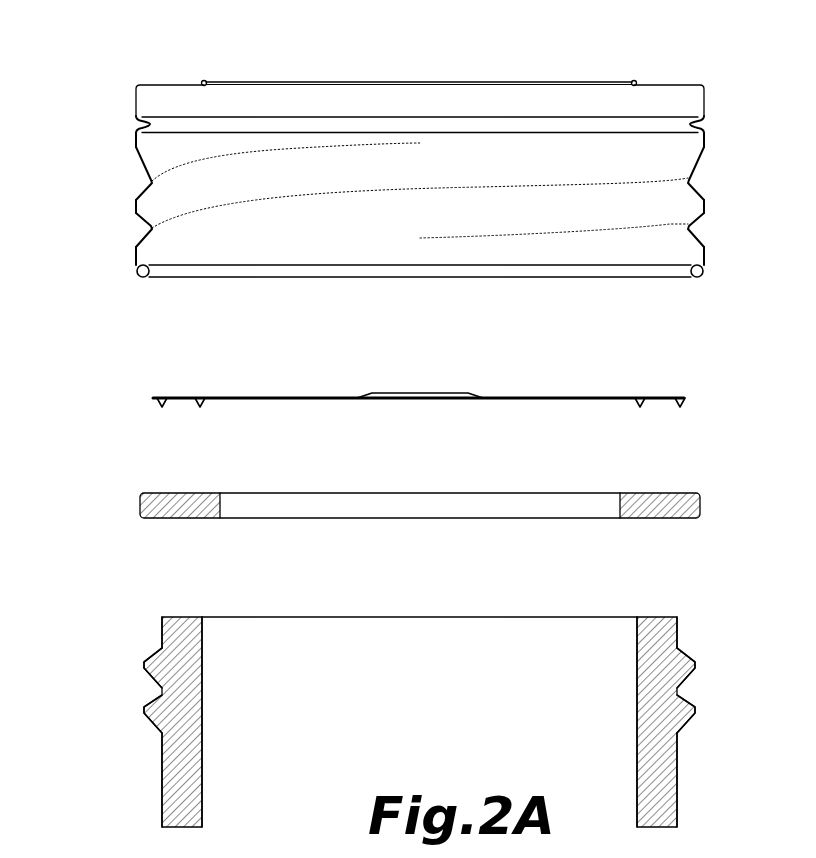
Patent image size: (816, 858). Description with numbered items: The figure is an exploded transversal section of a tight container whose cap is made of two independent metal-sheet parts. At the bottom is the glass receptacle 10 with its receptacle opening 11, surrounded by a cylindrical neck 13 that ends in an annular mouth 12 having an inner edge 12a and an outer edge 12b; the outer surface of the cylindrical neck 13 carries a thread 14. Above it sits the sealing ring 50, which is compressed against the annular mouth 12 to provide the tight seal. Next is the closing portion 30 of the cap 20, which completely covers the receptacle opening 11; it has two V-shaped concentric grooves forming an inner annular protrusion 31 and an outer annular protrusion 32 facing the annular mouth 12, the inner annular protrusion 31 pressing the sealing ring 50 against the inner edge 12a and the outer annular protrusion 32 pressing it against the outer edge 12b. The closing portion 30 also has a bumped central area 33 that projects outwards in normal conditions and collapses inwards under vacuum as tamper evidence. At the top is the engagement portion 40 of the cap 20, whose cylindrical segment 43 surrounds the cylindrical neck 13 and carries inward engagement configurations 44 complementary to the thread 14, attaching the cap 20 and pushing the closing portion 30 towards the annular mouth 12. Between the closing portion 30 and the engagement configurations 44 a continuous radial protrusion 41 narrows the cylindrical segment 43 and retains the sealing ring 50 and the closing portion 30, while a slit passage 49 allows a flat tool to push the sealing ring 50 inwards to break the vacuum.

The cap 20 is at (118, 52).
The engagement portion 40 is at (64, 88).
The radial protrusion 41 is at (138, 124).
The cylindrical segment 43 is at (137, 143).
The engagement configurations 44 is at (148, 180).
The slit passage 49 is at (706, 93).
The closing portion 30 is at (288, 398).
The inner annular protrusion 31 is at (204, 396).
The outer annular protrusion 32 is at (162, 396).
The bumped central area 33 is at (420, 393).
The sealing ring 50 is at (182, 506).
The glass receptacle 10 is at (148, 767).
The receptacle opening 11 is at (398, 616).
The annular mouth 12 is at (180, 616).
The inner edge 12a is at (204, 616).
The outer edge 12b is at (161, 616).
The cylindrical neck 13 is at (160, 632).
The thread 14 is at (143, 665).